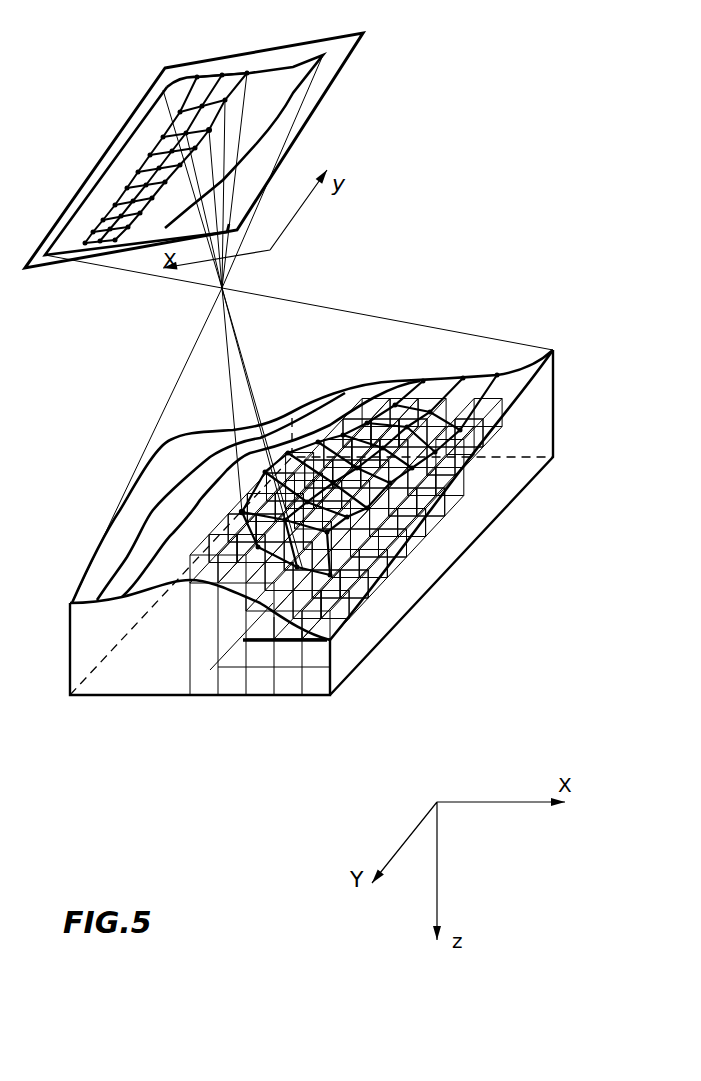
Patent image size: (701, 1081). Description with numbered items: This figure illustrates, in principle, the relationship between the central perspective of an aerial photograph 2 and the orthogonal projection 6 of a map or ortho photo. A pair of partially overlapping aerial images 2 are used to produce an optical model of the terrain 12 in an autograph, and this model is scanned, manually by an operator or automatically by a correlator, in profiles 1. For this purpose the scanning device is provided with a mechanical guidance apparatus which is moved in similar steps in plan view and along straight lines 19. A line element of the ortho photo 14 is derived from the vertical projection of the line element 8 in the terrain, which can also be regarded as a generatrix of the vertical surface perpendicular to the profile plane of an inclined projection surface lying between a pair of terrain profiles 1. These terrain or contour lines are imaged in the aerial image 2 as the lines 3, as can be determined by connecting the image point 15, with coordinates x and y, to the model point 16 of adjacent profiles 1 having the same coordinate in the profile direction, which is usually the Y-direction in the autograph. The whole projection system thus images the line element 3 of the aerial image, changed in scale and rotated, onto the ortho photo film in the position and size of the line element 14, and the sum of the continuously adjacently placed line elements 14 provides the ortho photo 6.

The profiles 1 is at (233, 573).
The aerial photograph 2 is at (345, 48).
The lines 3 is at (190, 134).
The orthogonal projection 6 is at (345, 665).
The line element 8 is at (240, 516).
The terrain 12 is at (556, 352).
The line element of the ortho photo 14 is at (243, 641).
The image point 15 is at (212, 131).
The model point 16 is at (241, 511).
The straight lines 19 is at (210, 670).